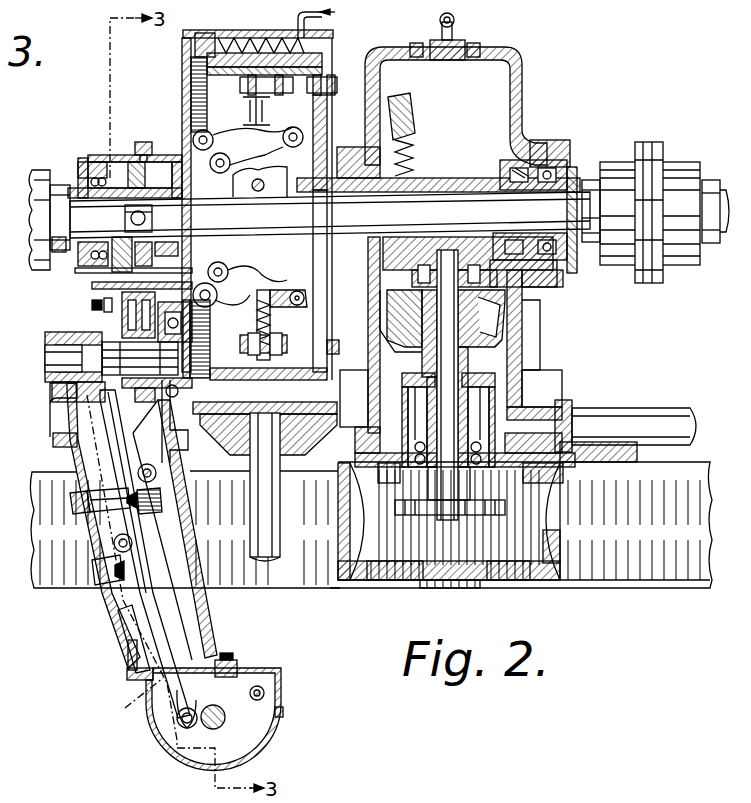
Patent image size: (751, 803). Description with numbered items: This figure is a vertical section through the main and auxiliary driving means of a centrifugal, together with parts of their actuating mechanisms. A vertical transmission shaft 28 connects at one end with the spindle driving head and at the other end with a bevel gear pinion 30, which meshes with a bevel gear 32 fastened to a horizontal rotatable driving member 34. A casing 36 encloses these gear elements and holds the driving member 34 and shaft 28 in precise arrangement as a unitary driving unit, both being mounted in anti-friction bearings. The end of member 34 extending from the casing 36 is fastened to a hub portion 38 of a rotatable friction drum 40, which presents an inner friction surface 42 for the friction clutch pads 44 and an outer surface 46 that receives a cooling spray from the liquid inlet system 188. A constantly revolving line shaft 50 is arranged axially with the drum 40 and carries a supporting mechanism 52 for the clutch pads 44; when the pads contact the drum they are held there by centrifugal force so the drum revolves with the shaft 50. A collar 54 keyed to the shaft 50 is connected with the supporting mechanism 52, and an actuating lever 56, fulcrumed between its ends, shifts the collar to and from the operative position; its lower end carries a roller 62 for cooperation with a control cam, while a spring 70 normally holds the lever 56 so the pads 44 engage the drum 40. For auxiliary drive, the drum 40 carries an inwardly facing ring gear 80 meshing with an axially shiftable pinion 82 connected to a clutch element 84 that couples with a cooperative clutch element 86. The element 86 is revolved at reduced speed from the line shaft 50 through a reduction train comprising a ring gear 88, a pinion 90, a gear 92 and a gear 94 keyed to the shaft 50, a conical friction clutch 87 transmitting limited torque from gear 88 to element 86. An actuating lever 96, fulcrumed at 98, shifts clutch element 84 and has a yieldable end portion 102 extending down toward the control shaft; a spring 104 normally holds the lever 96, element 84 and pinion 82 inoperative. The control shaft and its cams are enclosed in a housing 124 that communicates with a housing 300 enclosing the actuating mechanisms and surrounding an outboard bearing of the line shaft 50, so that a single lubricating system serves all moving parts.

The vertical transmission shaft 28 is at (450, 410).
The bevel gear pinion 30 is at (495, 345).
The bevel gear 32 is at (400, 120).
The rotatable driving member 34 is at (452, 180).
The casing 36 is at (521, 108).
The hub portion 38 is at (308, 172).
The friction drum 40 is at (325, 78).
The inner friction surface 42 is at (251, 100).
The friction clutch pads 44 is at (183, 93).
The outer surface 46 is at (228, 40).
The line shaft 50 is at (62, 198).
The supporting mechanism 52 is at (275, 138).
The collar 54 is at (330, 215).
The actuating lever 56 is at (158, 560).
The roller 62 is at (180, 725).
The spring 70 is at (110, 512).
The ring gear 80 is at (198, 330).
The pinion 82 is at (196, 344).
The clutch element 84 is at (100, 305).
The cooperative clutch element 86 is at (104, 306).
The conical friction clutch 87 is at (92, 302).
The ring gear 88 is at (108, 296).
The pinion 90 is at (150, 270).
The gear 92 is at (78, 267).
The gear 94 is at (125, 219).
The actuating lever 96 is at (100, 470).
The fulcrum 98 is at (112, 546).
The yieldable end portion 102 is at (150, 700).
The spring 104 is at (110, 598).
The housing 124 is at (268, 750).
The liquid inlet system 188 is at (325, 16).
The housing 300 is at (178, 505).